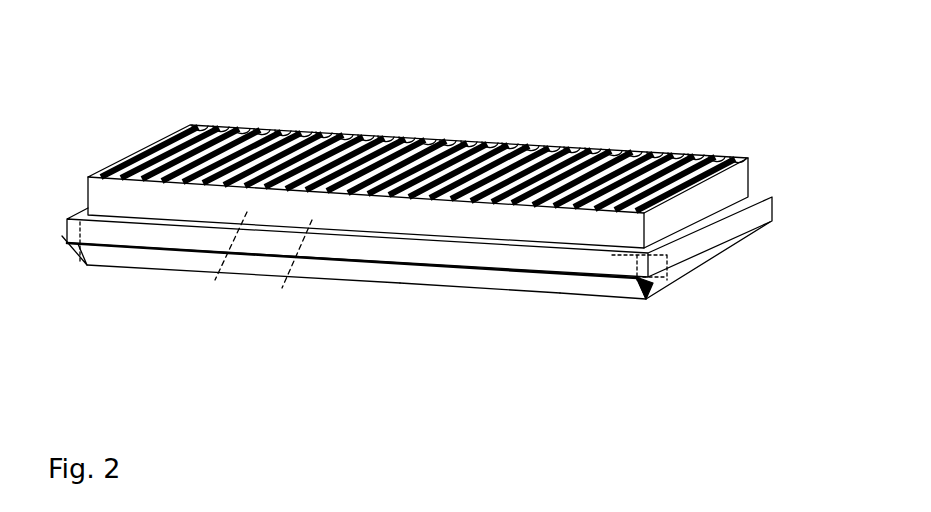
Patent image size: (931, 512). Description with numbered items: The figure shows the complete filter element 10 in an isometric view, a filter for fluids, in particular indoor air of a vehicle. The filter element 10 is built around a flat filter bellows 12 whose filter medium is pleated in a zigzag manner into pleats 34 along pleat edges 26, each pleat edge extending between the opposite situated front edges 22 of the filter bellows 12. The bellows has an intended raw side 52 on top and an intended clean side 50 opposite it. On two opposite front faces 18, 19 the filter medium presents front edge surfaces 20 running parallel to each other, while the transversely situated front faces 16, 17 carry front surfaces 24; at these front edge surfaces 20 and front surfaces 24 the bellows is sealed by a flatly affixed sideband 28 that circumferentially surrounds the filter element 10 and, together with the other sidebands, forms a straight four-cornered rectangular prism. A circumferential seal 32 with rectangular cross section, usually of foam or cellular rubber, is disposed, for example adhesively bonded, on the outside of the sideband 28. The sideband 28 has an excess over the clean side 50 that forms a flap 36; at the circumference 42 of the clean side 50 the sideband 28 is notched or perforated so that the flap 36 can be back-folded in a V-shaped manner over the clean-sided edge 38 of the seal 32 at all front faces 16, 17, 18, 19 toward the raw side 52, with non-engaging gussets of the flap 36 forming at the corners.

The filter element 10 is at (668, 103).
The filter bellows 12 is at (422, 170).
The front face 16 is at (108, 157).
The front face 17 is at (738, 183).
The front face 18 is at (383, 225).
The front face 19 is at (363, 130).
The front edge surface 20 is at (280, 271).
The front edge 22 is at (215, 262).
The front surface 24 is at (772, 197).
The pleat edge 26 is at (215, 157).
The sideband 28 is at (583, 227).
The seal 32 is at (90, 263).
The pleat 34 is at (290, 158).
The flap 36 is at (122, 262).
The edge of seal 38 is at (690, 253).
The circumference of clean side 42 is at (584, 300).
The clean side 50 is at (490, 298).
The raw side 52 is at (523, 170).